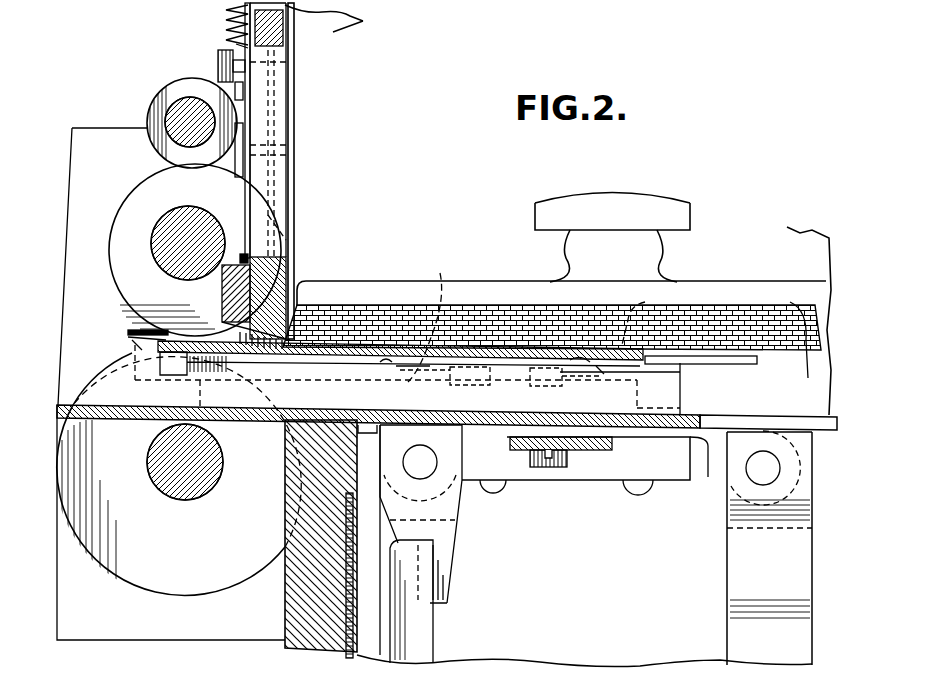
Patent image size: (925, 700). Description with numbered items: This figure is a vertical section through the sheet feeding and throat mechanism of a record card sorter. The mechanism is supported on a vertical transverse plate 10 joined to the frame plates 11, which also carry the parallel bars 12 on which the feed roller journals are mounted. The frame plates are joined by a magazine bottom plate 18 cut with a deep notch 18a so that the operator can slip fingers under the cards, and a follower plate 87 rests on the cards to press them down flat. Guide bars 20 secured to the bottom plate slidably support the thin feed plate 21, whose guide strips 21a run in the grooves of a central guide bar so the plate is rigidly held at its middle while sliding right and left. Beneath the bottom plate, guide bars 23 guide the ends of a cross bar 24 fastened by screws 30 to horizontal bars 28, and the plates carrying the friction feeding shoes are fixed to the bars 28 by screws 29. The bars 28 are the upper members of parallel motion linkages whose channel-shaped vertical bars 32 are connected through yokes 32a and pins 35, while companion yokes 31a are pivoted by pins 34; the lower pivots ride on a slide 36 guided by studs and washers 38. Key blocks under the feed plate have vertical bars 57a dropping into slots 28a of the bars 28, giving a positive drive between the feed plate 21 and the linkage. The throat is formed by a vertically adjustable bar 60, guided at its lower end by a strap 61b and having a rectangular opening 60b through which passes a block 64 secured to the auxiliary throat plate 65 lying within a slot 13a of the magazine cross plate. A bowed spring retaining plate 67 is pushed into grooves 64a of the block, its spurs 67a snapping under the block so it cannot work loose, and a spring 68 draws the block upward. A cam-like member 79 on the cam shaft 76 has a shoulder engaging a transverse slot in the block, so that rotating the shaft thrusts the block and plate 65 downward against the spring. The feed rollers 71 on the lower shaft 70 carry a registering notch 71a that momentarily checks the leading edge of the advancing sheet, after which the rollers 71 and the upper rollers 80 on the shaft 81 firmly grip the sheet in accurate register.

The vertical transverse plate 10 is at (300, 604).
The frame plates 11 is at (526, 684).
The parallel bars 12 is at (90, 118).
The slot 13a is at (291, 20).
The magazine bottom plate 18 is at (500, 426).
The notch 18a is at (798, 431).
The guide bars 20 is at (554, 329).
The feed plate 21 is at (726, 359).
The guide strips 21a is at (173, 369).
The guide bars 23 is at (668, 463).
The cross bar 24 is at (590, 453).
The horizontal bars 28 is at (702, 470).
The slots 28a is at (490, 396).
The screws 29 is at (536, 318).
The screws 30 is at (558, 469).
The yokes 31a is at (751, 583).
The vertical bars 32 is at (410, 641).
The yokes 32a is at (444, 572).
The pins 34 is at (757, 476).
The pins 35 is at (428, 471).
The slide 36 is at (372, 633).
The washers 38 is at (370, 486).
The vertical bars 57a is at (514, 392).
The bar 60 is at (245, 27).
The rectangular opening 60b is at (273, 258).
The strap 61b is at (228, 299).
The rectangular block 64 is at (268, 123).
The grooves 64a is at (252, 91).
The auxiliary throat plate 65 is at (295, 197).
The spring retaining plate 67 is at (232, 98).
The spurs 67a is at (249, 257).
The spring 68 is at (238, 45).
The lower feed roller shaft 70 is at (181, 488).
The feed rollers 71 is at (160, 560).
The sheet registering notch 71a is at (132, 345).
The cam shaft 76 is at (183, 136).
The member 79 is at (152, 110).
The rollers 80 is at (116, 268).
The shaft 81 is at (170, 238).
The follower plate 87 is at (560, 217).